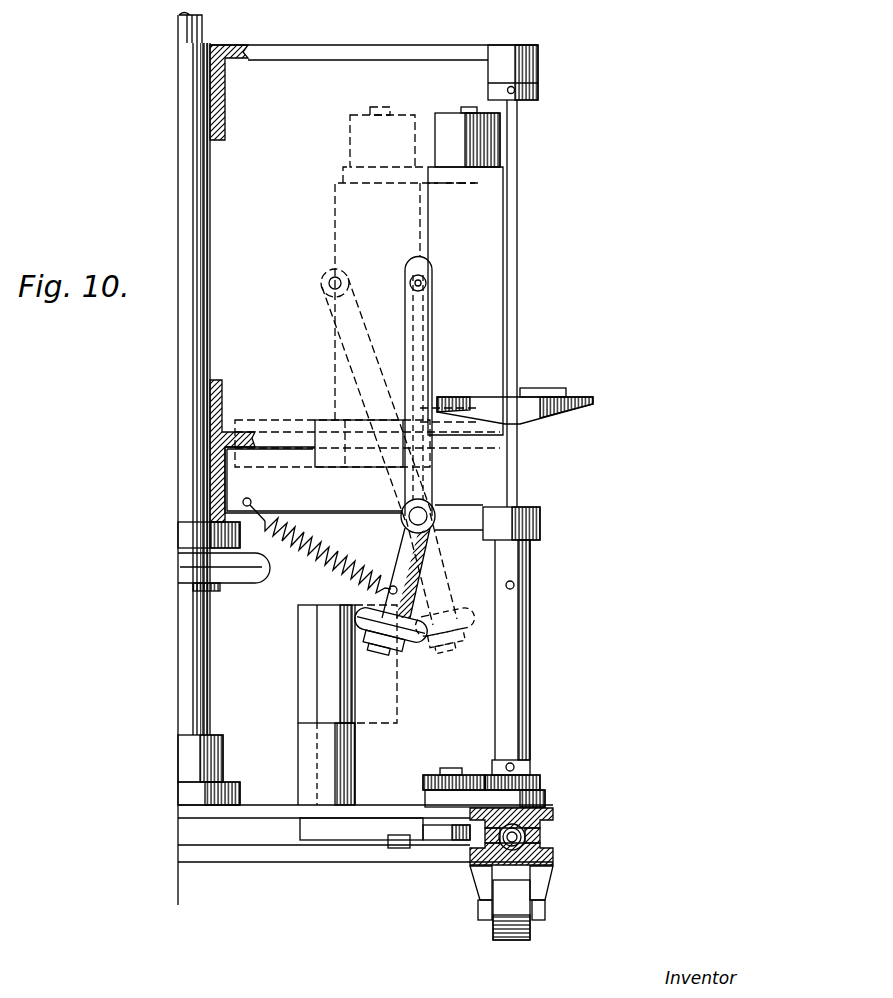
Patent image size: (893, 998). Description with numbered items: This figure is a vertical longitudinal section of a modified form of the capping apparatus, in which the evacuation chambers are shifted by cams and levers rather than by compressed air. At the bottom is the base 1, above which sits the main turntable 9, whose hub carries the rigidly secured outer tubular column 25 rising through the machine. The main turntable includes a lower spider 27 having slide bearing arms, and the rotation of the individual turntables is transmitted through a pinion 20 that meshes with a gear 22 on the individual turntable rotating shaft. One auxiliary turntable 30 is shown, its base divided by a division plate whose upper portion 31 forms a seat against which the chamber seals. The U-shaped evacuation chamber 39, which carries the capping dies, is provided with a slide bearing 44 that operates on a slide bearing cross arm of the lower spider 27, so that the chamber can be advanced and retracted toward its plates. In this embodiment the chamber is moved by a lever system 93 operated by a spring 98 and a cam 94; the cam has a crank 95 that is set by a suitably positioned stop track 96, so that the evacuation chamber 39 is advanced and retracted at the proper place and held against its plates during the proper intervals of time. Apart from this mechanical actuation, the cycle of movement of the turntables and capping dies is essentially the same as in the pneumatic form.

The base 1 is at (366, 855).
The main turntable 9 is at (250, 813).
The pinion 20 is at (426, 778).
The gear 22 is at (536, 777).
The outer tubular column 25 is at (210, 360).
The lower spider 27 is at (526, 712).
The auxiliary turntable 30 is at (582, 396).
The upper portion of division plate 31 is at (518, 272).
The evacuation chamber 39 is at (419, 271).
The slide bearing 44 is at (323, 410).
The lever system 93 is at (433, 357).
The cam 94 is at (345, 690).
The crank 95 is at (350, 830).
The stop track 96 is at (398, 848).
The spring 98 is at (320, 546).